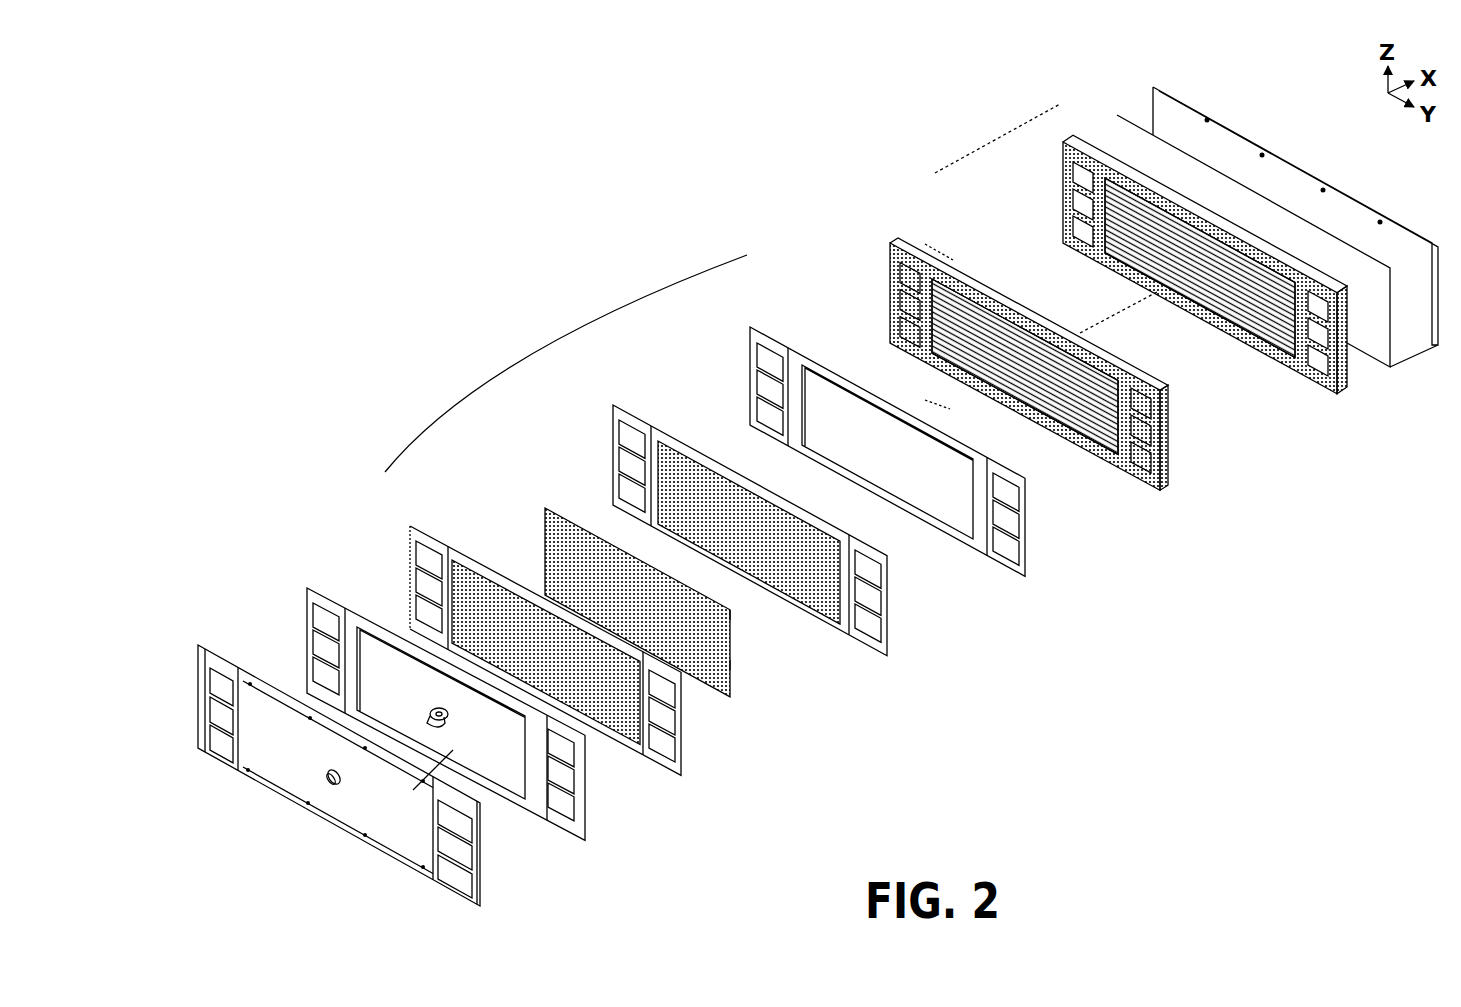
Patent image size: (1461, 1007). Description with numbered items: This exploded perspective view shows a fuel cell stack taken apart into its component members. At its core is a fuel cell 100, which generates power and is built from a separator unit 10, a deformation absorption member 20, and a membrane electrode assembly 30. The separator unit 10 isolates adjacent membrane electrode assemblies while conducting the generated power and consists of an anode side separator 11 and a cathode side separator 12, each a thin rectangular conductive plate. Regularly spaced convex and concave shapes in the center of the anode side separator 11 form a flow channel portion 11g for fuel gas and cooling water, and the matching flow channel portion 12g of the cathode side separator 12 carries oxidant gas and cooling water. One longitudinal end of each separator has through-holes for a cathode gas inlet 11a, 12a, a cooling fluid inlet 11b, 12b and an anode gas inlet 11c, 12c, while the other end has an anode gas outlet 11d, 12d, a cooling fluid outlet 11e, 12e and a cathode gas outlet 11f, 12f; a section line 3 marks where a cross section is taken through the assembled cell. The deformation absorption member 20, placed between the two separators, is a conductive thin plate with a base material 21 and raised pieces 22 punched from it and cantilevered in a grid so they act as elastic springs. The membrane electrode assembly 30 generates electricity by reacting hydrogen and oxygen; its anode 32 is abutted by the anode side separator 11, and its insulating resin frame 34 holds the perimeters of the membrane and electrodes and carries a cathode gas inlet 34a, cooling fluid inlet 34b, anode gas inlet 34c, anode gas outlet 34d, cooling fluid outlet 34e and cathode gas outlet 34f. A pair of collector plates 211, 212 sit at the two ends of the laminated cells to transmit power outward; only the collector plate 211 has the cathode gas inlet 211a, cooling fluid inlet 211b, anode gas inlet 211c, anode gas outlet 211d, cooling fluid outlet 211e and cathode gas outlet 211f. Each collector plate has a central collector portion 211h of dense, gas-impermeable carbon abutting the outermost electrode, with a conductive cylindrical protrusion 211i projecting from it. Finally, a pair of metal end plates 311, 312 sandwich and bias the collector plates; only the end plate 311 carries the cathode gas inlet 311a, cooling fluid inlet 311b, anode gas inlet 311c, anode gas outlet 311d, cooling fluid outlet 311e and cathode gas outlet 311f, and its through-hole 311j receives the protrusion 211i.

The fuel cell 100 is at (903, 194).
The section line III-III 3 is at (942, 251).
The separator unit 10 is at (404, 519).
The anode side separator 11 is at (887, 657).
The cathode gas inlet 11a is at (618, 432).
The cooling fluid inlet 11b is at (618, 459).
The anode gas inlet 11c is at (618, 486).
The anode gas outlet 11d is at (881, 576).
The cooling fluid outlet 11e is at (881, 603).
The cathode gas outlet 11f is at (881, 630).
The flow channel portion 11g is at (681, 452).
The cathode side separator 12 is at (681, 776).
The cathode gas inlet 12a is at (415, 553).
The cooling fluid inlet 12b is at (415, 580).
The anode gas inlet 12c is at (415, 607).
The anode gas outlet 12d is at (675, 696).
The cooling fluid outlet 12e is at (675, 723).
The cathode gas outlet 12f is at (675, 750).
The flow channel portion 12g is at (478, 573).
The deformation absorption member 20 is at (541, 500).
The base material 21 is at (731, 616).
The raised pieces 22 is at (731, 665).
The membrane electrode assembly 30 is at (746, 321).
The anode 32 is at (935, 503).
The frame 34 is at (983, 554).
The cathode gas inlet 34a is at (756, 355).
The cooling fluid inlet 34b is at (756, 382).
The anode gas inlet 34c is at (756, 409).
The anode gas outlet 34d is at (1019, 499).
The cooling fluid outlet 34e is at (1019, 526).
The cathode gas outlet 34f is at (1019, 553).
The collector plate 211 is at (308, 586).
The cathode gas inlet 211a is at (312, 615).
The cooling fluid inlet 211b is at (312, 642).
The anode gas inlet 211c is at (312, 669).
The anode gas outlet 211d is at (574, 755).
The cooling fluid outlet 211e is at (574, 782).
The cathode gas outlet 211f is at (574, 809).
The collector portion 211h is at (413, 790).
The protrusion 211i is at (430, 722).
The collector plate 212 is at (1117, 160).
The end plate 311 is at (198, 643).
The cathode gas inlet 311a is at (209, 680).
The cooling fluid inlet 311b is at (209, 709).
The anode gas inlet 311c is at (209, 737).
The anode gas outlet 311d is at (472, 831).
The cooling fluid outlet 311e is at (472, 858).
The cathode gas outlet 311f is at (472, 886).
The through-hole 311j is at (327, 784).
The end plate 312 is at (1153, 87).